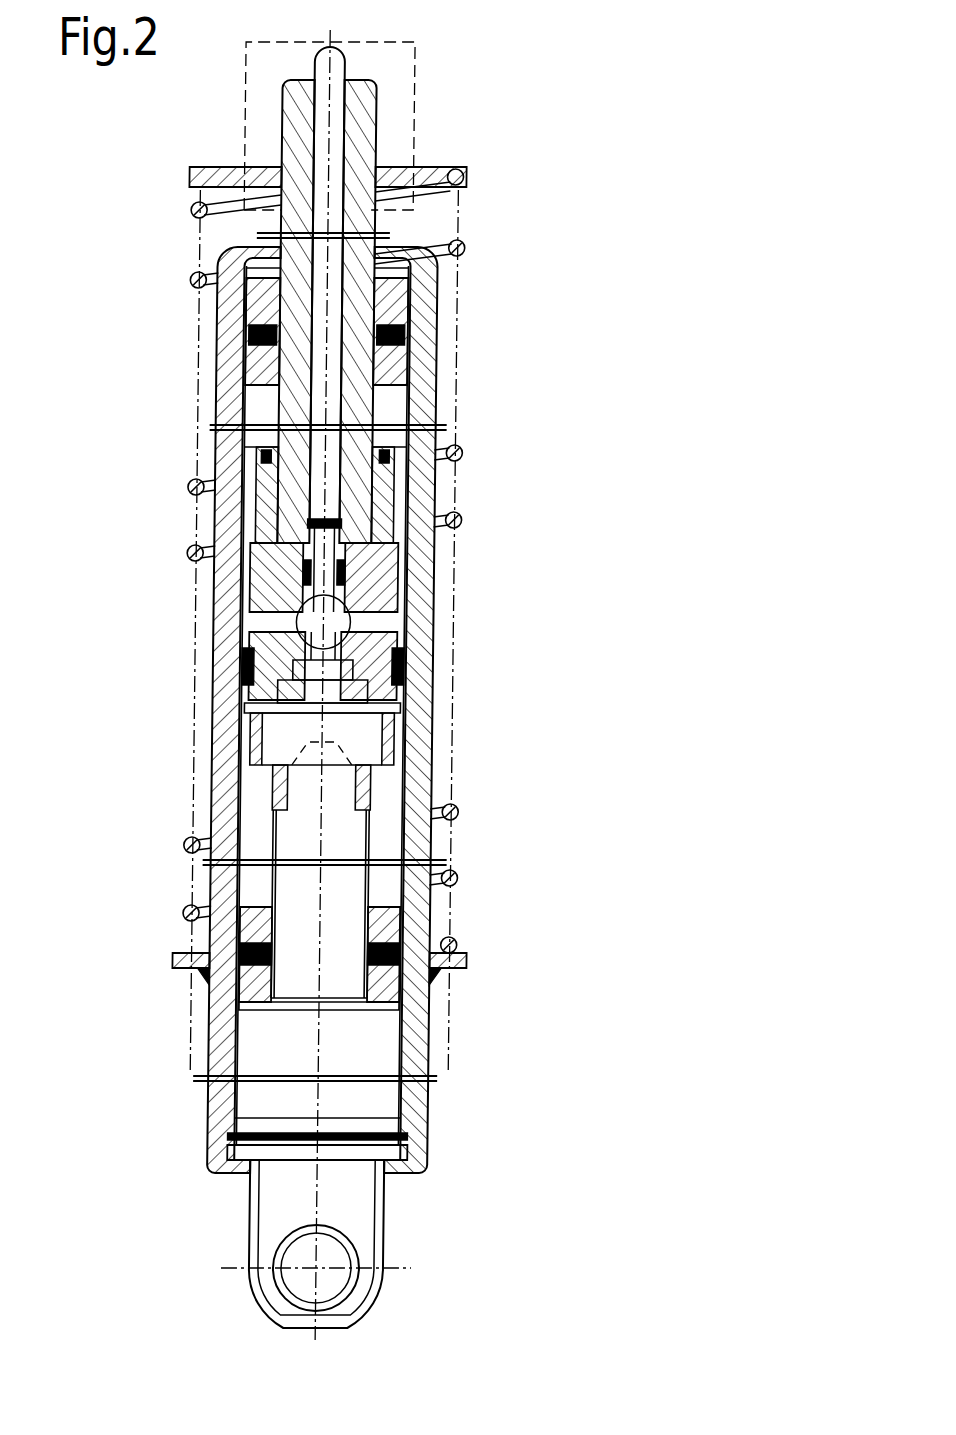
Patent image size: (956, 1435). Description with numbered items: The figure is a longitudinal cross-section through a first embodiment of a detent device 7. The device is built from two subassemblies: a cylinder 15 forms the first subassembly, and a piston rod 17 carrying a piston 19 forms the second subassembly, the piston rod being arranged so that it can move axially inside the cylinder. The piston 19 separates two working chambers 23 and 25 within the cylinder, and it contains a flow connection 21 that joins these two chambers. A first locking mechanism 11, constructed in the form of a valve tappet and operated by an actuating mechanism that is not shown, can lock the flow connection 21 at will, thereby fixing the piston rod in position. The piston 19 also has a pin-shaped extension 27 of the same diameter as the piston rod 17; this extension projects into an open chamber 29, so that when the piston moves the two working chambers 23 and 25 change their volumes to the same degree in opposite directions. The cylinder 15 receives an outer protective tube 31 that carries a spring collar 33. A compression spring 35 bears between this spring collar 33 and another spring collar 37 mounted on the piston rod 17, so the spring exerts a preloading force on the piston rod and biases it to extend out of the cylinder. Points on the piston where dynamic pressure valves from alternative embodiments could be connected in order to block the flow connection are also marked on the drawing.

The detent device 7 is at (493, 1093).
The first locking mechanism 11 is at (250, 588).
The cylinder 15 is at (405, 328).
The piston rod 17 is at (352, 127).
The piston 19 is at (372, 572).
The flow connection 21 is at (245, 636).
The working chamber 23 is at (263, 410).
The working chamber 25 is at (383, 808).
The pin-shaped extension 27 is at (343, 893).
The open chamber 29 is at (367, 1080).
The outer protective tube 31 is at (432, 405).
The spring collar 33 is at (467, 965).
The compression spring 35 is at (462, 453).
The spring collar 37 is at (460, 170).